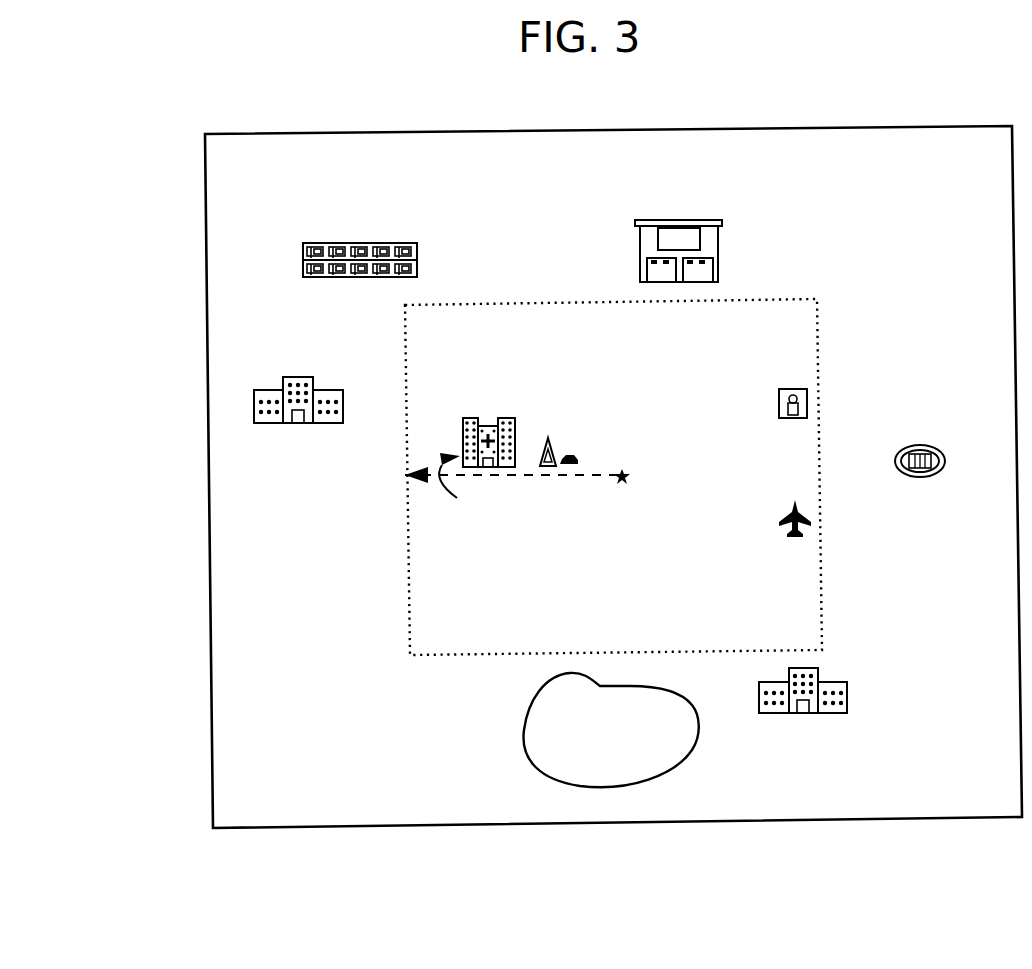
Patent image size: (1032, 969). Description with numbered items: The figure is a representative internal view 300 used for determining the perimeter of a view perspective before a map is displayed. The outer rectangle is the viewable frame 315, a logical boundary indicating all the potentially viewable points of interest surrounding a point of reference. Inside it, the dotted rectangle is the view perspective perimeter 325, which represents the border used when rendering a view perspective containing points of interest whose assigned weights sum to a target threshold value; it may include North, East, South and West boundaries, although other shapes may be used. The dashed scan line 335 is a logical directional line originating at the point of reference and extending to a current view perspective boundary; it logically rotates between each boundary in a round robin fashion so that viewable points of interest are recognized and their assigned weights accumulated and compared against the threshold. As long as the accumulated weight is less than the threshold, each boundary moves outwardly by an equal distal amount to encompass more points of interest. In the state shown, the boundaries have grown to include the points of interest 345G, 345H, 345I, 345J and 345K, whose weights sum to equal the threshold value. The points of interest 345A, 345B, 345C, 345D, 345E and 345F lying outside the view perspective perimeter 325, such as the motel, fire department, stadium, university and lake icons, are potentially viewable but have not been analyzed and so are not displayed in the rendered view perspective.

The representative internal view 300 is at (192, 101).
The viewable frame 315 is at (203, 268).
The view perspective perimeter 325 is at (757, 298).
The scan line 335 is at (423, 482).
The point of interest 345A is at (375, 240).
The point of interest 345B is at (680, 220).
The point of interest 345C is at (943, 448).
The point of interest 345D is at (848, 695).
The point of interest 345E is at (698, 746).
The point of interest 345F is at (310, 377).
The point of interest 345G is at (665, 448).
The point of interest 345H is at (778, 402).
The point of interest 345I is at (787, 518).
The point of interest 345J is at (469, 418).
The point of interest 345K is at (548, 440).